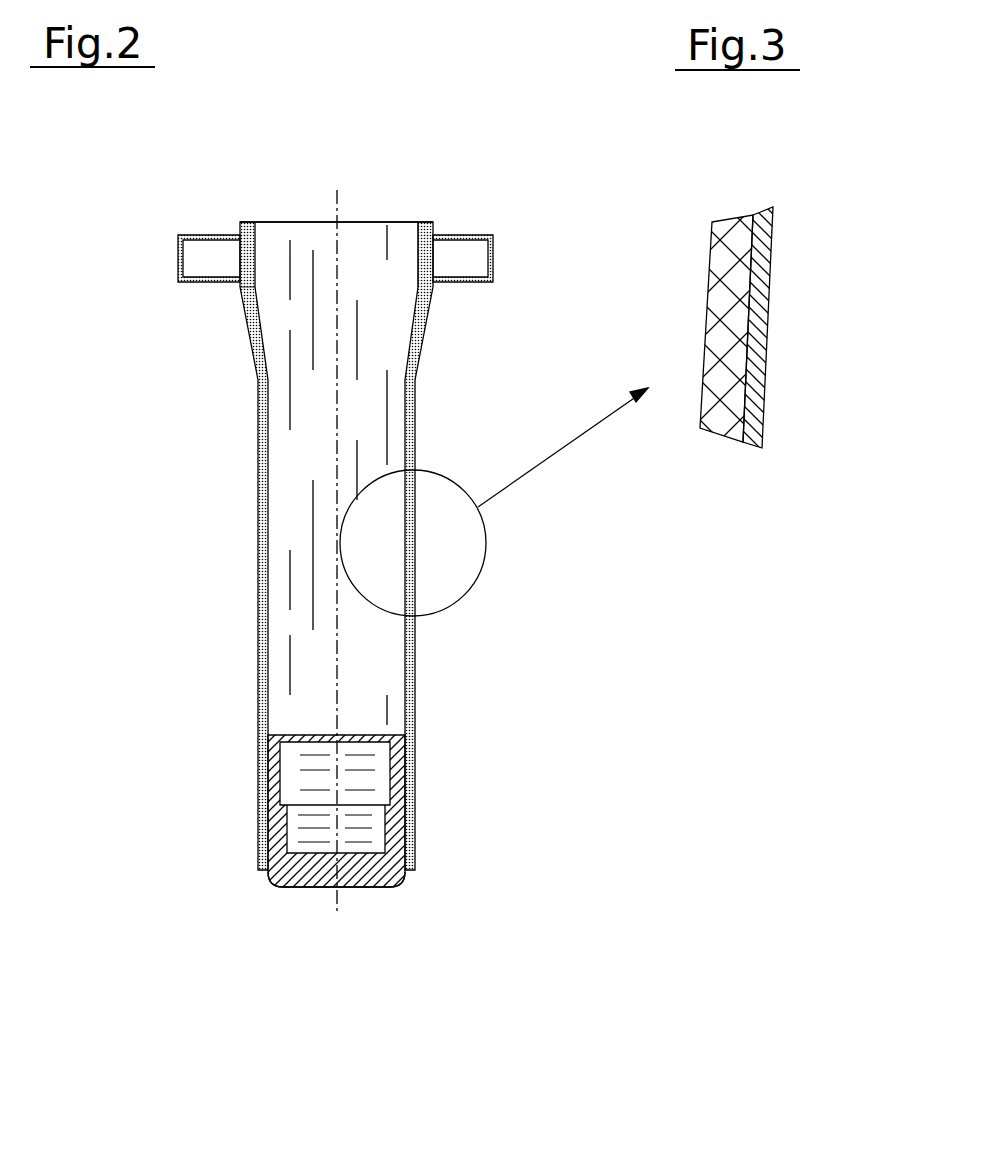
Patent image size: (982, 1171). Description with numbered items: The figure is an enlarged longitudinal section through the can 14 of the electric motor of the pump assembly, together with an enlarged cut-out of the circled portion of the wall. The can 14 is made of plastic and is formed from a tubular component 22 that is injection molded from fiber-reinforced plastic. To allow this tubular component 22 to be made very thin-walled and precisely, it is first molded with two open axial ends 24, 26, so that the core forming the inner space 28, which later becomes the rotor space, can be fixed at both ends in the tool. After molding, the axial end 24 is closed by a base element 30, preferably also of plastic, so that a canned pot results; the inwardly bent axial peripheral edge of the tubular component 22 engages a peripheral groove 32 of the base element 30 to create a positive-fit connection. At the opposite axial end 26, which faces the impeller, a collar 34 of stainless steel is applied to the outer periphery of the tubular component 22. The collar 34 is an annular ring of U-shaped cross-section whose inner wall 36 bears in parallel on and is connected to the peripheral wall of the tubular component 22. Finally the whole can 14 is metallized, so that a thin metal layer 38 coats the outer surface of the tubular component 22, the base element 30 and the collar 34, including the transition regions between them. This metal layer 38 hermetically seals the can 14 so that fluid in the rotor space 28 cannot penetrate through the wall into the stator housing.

In FIG. 2, the can 14 is at (243, 568).
In FIG. 2, the tubular component 22 is at (258, 428).
In FIG. 3, the tubular component 22 is at (717, 287).
In FIG. 2, the axial end 24 is at (347, 908).
In FIG. 2, the axial end 26 is at (362, 212).
In FIG. 2, the inner space 28 is at (373, 290).
In FIG. 2, the base element 30 is at (298, 888).
In FIG. 2, the peripheral groove 32 is at (403, 875).
In FIG. 2, the collar 34 is at (178, 258).
In FIG. 2, the inner wall 36 is at (232, 265).
In FIG. 3, the metal layer 38 is at (770, 333).